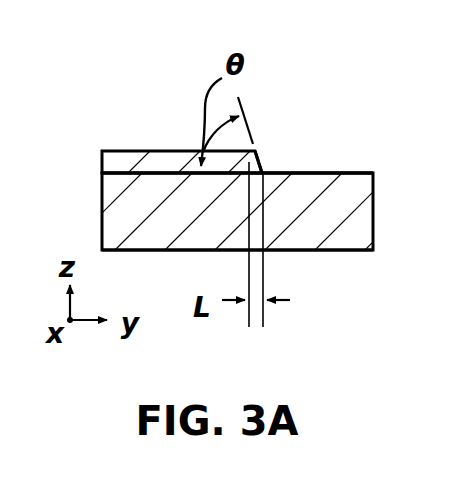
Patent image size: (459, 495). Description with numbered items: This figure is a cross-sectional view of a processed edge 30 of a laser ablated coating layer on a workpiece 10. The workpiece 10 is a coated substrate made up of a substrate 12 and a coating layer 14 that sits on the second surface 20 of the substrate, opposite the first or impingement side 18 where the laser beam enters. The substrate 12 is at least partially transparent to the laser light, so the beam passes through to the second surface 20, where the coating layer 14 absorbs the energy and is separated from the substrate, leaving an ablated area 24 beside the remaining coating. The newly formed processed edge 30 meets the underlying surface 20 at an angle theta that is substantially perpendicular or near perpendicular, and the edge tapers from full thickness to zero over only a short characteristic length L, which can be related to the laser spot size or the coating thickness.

The workpiece 10 is at (77, 111).
The substrate 12 is at (102, 197).
The coating layer 14 is at (153, 157).
The impingement side 18 is at (328, 250).
The second surface 20 is at (329, 173).
The ablated area 24 is at (358, 173).
The processed edge 30 is at (259, 160).